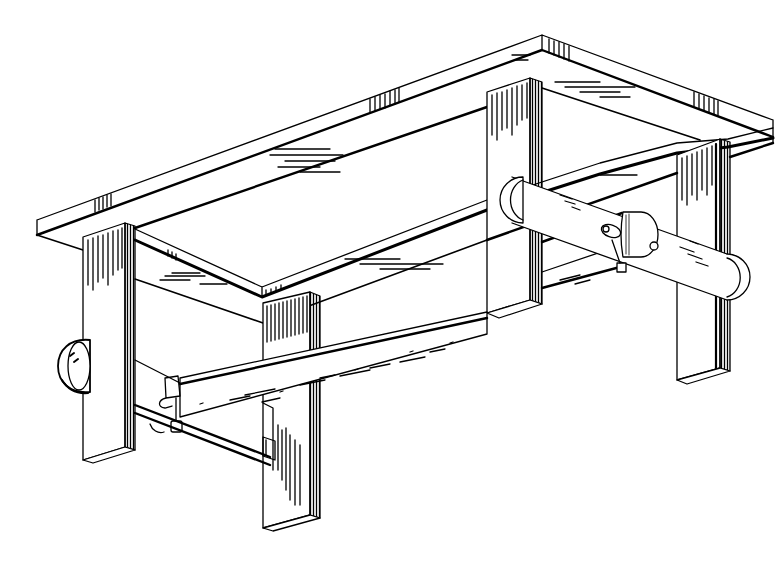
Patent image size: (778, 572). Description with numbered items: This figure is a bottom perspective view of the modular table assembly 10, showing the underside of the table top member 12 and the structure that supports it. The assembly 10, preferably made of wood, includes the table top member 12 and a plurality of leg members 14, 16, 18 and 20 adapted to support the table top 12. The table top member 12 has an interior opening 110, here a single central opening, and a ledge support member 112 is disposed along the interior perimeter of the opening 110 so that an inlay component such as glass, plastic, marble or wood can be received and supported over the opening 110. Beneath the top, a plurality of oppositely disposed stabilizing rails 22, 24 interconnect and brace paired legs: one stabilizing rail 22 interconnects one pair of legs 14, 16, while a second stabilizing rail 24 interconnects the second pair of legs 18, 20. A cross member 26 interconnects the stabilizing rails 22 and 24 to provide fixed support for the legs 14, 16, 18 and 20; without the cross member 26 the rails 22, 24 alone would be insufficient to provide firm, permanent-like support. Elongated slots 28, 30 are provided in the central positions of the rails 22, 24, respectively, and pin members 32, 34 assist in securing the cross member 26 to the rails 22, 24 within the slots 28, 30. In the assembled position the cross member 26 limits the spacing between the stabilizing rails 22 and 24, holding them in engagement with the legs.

The modular table assembly 10 is at (188, 150).
The table top member 12 is at (334, 126).
The interior opening 110 is at (380, 168).
The ledge support member 112 is at (207, 250).
The leg member 14 is at (513, 305).
The leg member 16 is at (690, 363).
The leg member 18 is at (100, 418).
The leg member 20 is at (296, 424).
The stabilizing rail 22 is at (692, 276).
The stabilizing rail 24 is at (255, 440).
The cross member 26 is at (403, 326).
The elongated slot 28 is at (618, 270).
The elongated slot 30 is at (177, 384).
The pin member 32 is at (624, 274).
The pin member 34 is at (176, 432).